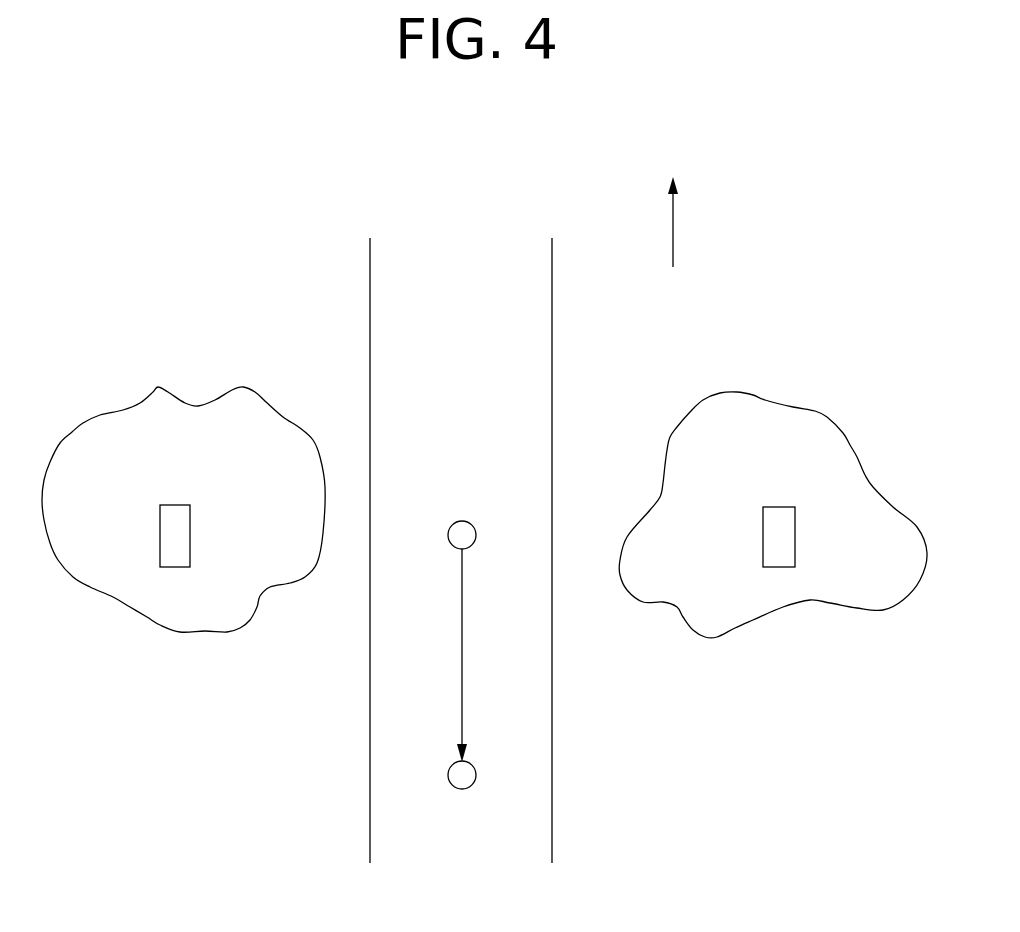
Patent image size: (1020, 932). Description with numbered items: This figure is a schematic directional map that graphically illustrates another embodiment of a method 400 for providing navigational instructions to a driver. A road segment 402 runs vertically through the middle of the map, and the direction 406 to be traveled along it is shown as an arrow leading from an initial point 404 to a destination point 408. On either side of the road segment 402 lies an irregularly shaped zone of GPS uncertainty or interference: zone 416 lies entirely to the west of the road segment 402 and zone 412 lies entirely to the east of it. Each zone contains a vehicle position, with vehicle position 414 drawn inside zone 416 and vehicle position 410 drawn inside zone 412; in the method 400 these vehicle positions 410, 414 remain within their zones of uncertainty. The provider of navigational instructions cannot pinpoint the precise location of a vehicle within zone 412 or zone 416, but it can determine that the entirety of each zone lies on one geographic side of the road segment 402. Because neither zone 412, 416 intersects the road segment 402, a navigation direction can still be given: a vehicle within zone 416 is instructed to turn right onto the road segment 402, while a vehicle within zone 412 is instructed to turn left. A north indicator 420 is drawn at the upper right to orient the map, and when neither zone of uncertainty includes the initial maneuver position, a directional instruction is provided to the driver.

The method for providing navigational instructions 400 is at (470, 100).
The road segment 402 is at (485, 246).
The initial point 404 is at (465, 517).
The direction 406 is at (463, 683).
The destination point 408 is at (458, 790).
The vehicle position 410 is at (780, 567).
The zone of uncertainty 412 is at (765, 400).
The vehicle position 414 is at (163, 567).
The zone of uncertainty 416 is at (158, 387).
The north indicator 420 is at (673, 222).